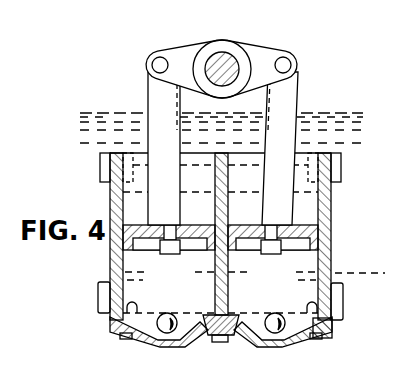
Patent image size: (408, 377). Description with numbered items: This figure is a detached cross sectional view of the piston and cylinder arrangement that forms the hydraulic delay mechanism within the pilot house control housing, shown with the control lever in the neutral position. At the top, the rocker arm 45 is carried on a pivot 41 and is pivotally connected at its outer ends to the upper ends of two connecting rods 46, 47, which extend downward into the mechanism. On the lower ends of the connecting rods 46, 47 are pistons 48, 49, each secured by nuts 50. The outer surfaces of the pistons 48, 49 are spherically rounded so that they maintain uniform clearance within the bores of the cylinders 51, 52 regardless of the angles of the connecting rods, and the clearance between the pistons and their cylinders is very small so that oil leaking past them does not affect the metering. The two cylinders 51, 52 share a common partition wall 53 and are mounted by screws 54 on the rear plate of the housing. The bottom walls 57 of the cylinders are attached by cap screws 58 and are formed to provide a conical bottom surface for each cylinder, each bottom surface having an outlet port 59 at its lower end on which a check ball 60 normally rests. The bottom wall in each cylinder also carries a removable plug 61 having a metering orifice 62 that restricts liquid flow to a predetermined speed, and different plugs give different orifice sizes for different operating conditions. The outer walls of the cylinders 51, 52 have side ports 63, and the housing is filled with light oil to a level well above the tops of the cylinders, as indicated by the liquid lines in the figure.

The pivot pin 41 is at (212, 60).
The rocker arm 45 is at (238, 44).
The connecting rod 46 is at (148, 93).
The connecting rod 47 is at (296, 104).
The piston 48 is at (124, 238).
The piston 49 is at (321, 249).
The nut 50 is at (170, 252).
The cylinder 51 is at (107, 287).
The cylinder 52 is at (343, 303).
The common partition wall 53 is at (228, 300).
The screw 54 is at (100, 165).
The bottom wall 57 is at (331, 326).
The cap screw 58 is at (126, 339).
The outlet port 59 is at (167, 347).
The check ball 60 is at (167, 313).
The removable plug 61 is at (204, 336).
The metering orifice 62 is at (208, 318).
The side port 63 is at (112, 228).